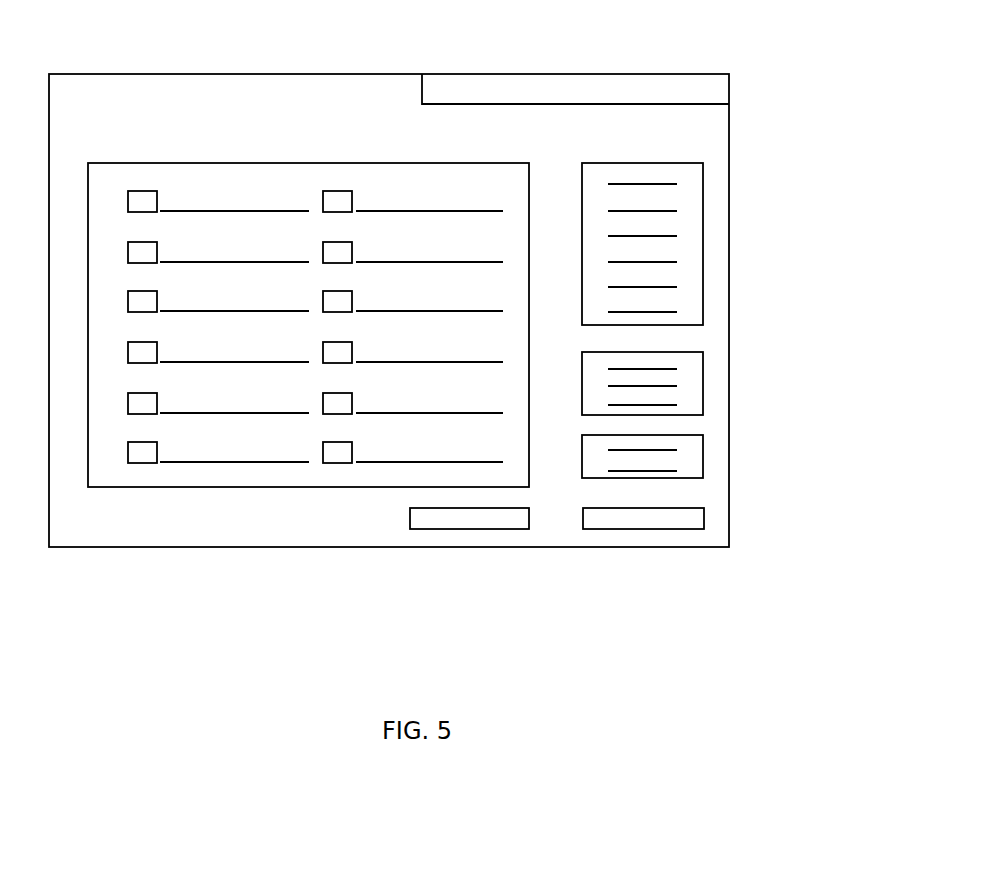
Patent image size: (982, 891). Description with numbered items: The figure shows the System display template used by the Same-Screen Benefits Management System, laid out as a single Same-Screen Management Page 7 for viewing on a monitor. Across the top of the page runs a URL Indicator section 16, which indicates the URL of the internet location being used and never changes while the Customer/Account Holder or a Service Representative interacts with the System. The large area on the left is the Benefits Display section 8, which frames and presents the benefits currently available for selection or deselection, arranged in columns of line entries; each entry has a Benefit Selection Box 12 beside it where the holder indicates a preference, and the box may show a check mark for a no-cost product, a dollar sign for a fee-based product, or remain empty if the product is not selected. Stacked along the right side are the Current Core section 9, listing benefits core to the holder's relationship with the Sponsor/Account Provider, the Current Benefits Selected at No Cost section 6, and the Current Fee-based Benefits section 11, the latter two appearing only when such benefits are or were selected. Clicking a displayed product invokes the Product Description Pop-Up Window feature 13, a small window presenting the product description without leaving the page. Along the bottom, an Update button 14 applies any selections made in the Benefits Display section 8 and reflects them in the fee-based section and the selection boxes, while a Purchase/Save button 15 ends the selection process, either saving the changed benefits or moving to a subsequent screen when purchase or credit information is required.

The Current Benefits Selected at No Cost section 6 is at (705, 354).
The Same-Screen Management Page 7 is at (310, 549).
The Benefits Display section 8 is at (174, 489).
The Current Core section 9 is at (705, 170).
The Current Fee-based Benefits section 11 is at (705, 442).
The Benefit Selection Box 12 is at (145, 189).
The Product Description Pop-Up Window feature 13 is at (236, 207).
The Update button 14 is at (491, 531).
The Purchase/Save button 15 is at (627, 531).
The URL Indicator section 16 is at (497, 99).